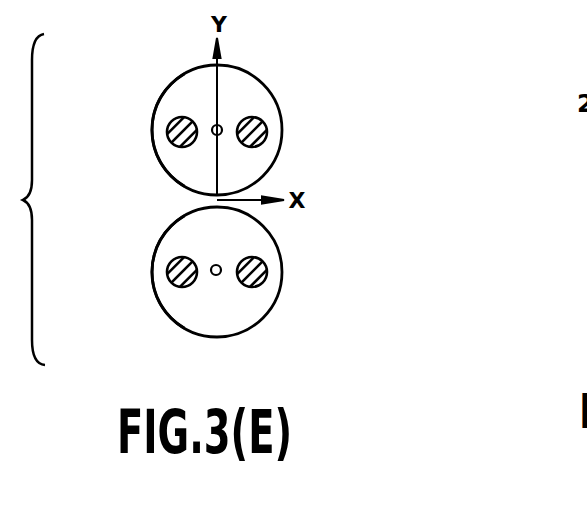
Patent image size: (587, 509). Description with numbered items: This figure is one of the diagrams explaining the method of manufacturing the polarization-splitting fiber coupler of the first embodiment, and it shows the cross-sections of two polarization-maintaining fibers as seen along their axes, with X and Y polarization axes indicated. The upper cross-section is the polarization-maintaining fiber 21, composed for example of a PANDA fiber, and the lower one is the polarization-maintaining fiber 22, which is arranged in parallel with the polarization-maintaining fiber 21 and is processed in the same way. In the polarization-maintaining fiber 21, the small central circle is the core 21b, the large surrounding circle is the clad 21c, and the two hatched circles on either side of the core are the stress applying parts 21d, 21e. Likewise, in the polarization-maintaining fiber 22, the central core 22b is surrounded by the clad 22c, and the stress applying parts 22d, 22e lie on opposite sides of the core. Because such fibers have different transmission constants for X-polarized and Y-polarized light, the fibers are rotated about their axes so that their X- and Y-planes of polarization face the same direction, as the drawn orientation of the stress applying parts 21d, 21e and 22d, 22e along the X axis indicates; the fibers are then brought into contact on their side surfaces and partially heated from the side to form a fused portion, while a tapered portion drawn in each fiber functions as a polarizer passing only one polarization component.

The polarization-maintaining fiber 21 is at (280, 110).
The core 21b is at (213, 125).
The clad 21c is at (168, 102).
The stress applying part 21d is at (172, 140).
The stress applying part 21e is at (263, 143).
The polarization-maintaining fiber 22 is at (277, 248).
The core 22b is at (213, 264).
The clad 22c is at (153, 258).
The stress applying part 22d is at (178, 286).
The stress applying part 22e is at (264, 284).